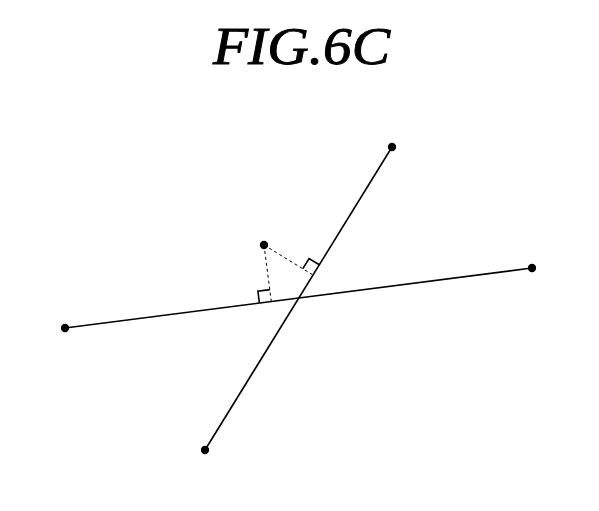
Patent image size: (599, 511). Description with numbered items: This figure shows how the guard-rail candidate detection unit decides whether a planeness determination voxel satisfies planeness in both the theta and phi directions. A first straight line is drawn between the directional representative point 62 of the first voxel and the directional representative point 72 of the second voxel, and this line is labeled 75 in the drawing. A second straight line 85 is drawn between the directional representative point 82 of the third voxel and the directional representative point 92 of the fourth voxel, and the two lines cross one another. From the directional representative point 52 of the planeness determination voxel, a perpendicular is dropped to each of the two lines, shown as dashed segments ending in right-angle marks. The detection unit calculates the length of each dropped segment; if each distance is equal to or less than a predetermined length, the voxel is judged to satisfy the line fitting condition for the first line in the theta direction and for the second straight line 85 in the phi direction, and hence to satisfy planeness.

The directional representative point of the planeness determination voxel 52 is at (262, 242).
The directional representative point of the first voxel 62 is at (65, 323).
The directional representative point of the second voxel 72 is at (532, 265).
The first line 75 is at (435, 280).
The directional representative point of the third voxel 82 is at (396, 147).
The second straight line 85 is at (380, 168).
The directional representative point of the fourth voxel 92 is at (203, 450).